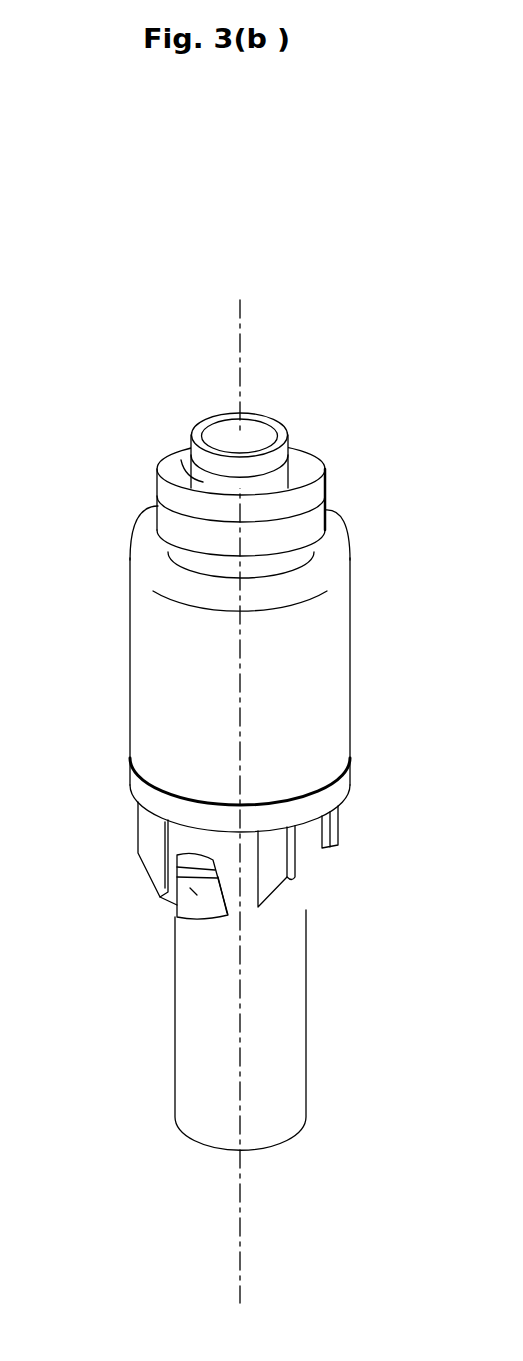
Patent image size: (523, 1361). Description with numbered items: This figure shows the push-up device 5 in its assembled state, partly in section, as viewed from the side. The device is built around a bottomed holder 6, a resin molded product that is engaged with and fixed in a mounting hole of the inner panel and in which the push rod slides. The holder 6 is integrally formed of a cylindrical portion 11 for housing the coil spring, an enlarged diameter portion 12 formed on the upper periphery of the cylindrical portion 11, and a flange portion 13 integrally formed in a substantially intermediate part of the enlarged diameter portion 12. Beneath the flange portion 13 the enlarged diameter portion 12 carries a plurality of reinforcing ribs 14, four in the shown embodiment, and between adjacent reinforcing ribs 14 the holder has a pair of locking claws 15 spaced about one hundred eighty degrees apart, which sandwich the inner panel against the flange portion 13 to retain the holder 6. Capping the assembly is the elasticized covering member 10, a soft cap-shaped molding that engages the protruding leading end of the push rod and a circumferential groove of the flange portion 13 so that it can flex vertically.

The push-up device 5 is at (1, 284).
The bottomed holder 6 is at (289, 1004).
The covering member 10 is at (342, 628).
The cylindrical portion 11 is at (288, 1100).
The enlarged diameter portion 12 is at (157, 902).
The flange portion 13 is at (340, 768).
The reinforcing ribs 14 is at (156, 841).
The locking claws 15 is at (193, 891).